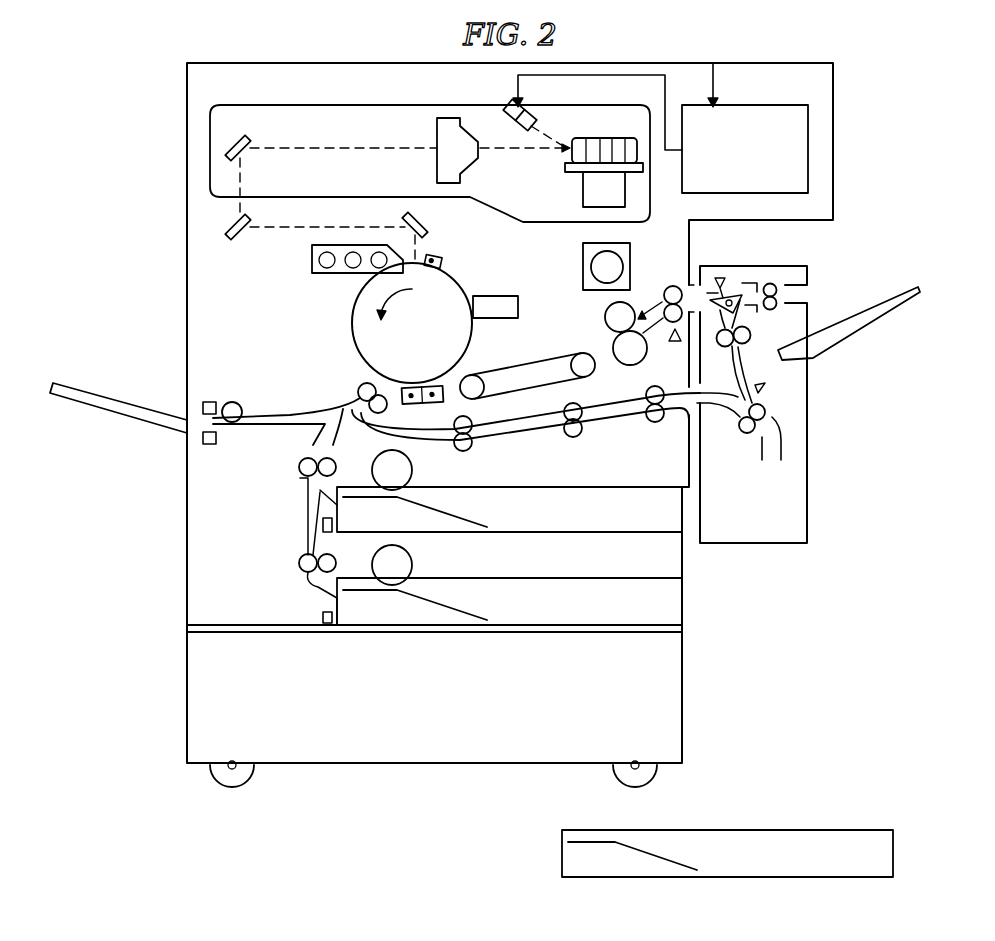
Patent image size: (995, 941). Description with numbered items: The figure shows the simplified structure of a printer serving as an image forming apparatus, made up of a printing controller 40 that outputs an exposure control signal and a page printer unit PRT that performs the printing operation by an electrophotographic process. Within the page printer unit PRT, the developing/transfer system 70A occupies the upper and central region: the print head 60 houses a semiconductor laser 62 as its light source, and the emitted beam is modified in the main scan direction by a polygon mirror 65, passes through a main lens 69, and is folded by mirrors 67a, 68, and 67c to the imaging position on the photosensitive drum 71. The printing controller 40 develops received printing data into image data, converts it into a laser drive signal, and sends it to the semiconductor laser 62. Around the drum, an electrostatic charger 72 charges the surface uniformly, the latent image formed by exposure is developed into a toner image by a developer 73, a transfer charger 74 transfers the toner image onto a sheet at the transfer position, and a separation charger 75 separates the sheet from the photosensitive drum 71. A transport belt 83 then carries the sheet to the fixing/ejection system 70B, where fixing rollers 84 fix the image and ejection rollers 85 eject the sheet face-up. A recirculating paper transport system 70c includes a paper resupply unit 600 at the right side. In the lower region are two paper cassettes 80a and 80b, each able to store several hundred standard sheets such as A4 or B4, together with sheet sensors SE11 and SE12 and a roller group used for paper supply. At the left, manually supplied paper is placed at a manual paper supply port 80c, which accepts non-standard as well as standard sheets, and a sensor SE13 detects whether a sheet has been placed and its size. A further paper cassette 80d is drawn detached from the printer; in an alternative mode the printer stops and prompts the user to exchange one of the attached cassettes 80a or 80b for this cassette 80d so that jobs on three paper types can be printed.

The page printer unit PRT is at (197, 315).
The print head 60 is at (369, 128).
The mirror 67a is at (247, 138).
The mirror 68 is at (234, 237).
The mirror 67c is at (427, 229).
The main lens 69 is at (436, 163).
The semiconductor laser 62 is at (521, 129).
The polygon mirror 65 is at (605, 158).
The printing controller 40 is at (733, 160).
The developer 73 is at (341, 275).
The electrostatic charger 72 is at (443, 262).
The developing/transfer system 70A is at (247, 309).
The photosensitive drum 71 is at (400, 337).
The transport belt 83 is at (522, 364).
The fixing rollers 84 is at (614, 343).
The ejection rollers 85 is at (671, 285).
The fixing/ejection system 70B is at (531, 297).
The sensor SE13 is at (210, 399).
The manual paper supply port 80c is at (120, 398).
The recirculating paper transport system 70c is at (512, 474).
The transfer charger 74 is at (415, 404).
The separation charger 75 is at (441, 406).
The paper cassette 80a is at (610, 487).
The sheet sensor SE11 is at (323, 525).
The paper cassette 80b is at (537, 577).
The sheet sensor SE12 is at (323, 615).
The paper resupply unit 600 is at (808, 496).
The paper cassette 80d is at (745, 830).